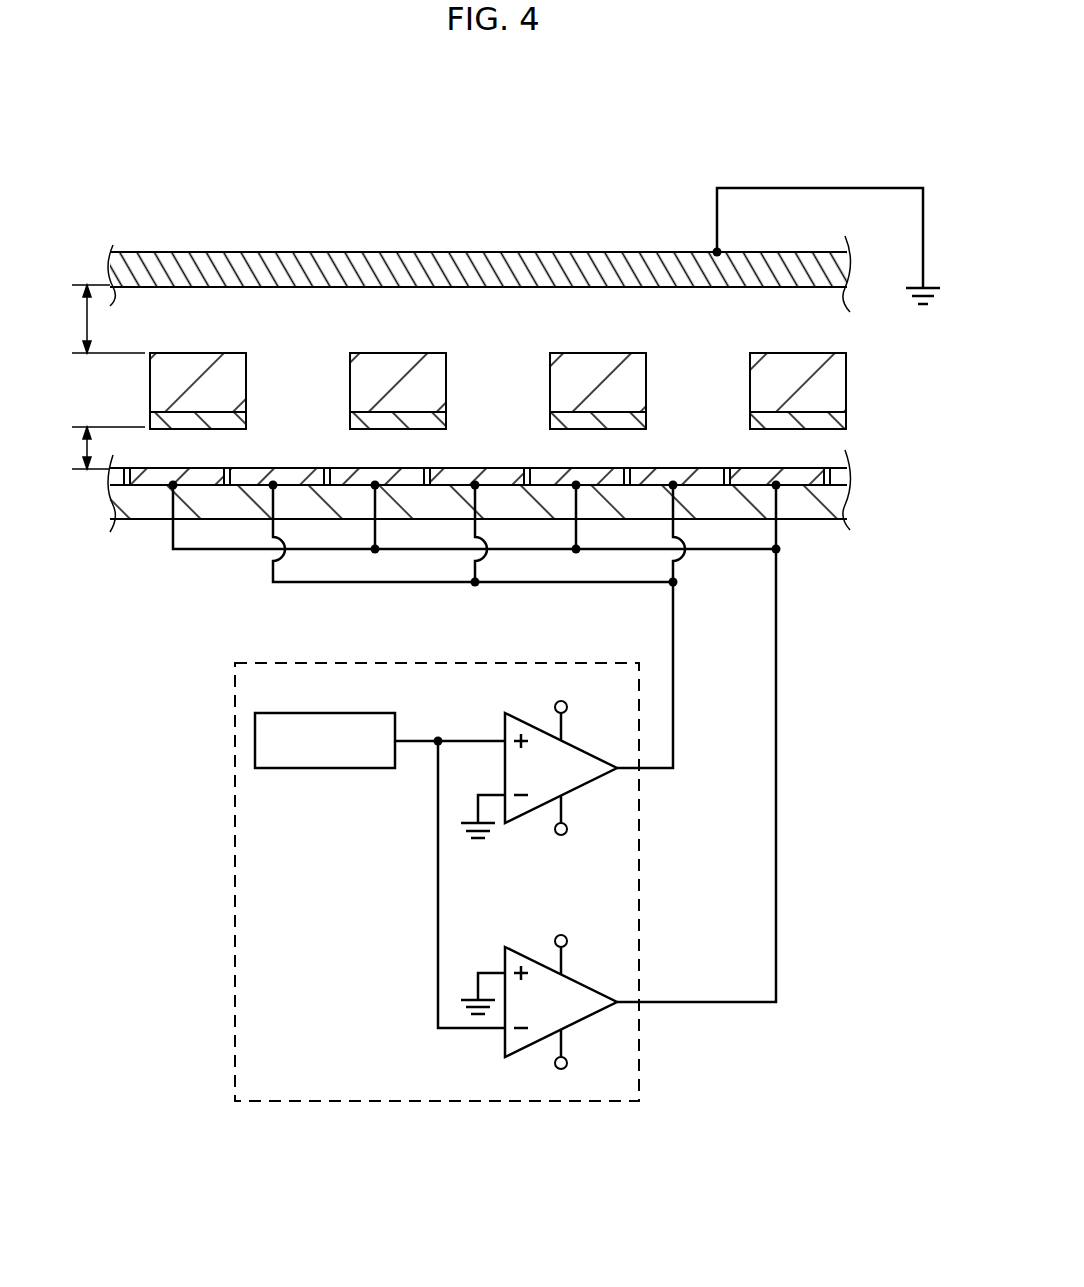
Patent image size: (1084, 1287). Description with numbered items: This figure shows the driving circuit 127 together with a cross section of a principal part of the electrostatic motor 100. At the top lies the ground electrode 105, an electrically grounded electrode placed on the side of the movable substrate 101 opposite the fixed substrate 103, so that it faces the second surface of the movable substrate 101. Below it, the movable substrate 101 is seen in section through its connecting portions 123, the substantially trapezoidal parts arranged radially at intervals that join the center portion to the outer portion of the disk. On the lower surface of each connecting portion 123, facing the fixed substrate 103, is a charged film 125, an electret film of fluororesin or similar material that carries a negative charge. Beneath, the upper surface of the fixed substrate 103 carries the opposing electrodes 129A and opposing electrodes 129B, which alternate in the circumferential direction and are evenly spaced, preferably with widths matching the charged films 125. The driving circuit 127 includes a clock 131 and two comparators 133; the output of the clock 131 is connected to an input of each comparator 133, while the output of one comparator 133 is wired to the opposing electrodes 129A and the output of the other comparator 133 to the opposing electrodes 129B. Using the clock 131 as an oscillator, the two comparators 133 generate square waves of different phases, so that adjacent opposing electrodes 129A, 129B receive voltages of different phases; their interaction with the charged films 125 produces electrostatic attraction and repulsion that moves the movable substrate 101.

The electrostatic motor 100 is at (836, 143).
The movable substrate 101 is at (549, 305).
The fixed substrate 103 is at (806, 510).
The ground electrode 105 is at (551, 258).
The connecting portion 123 is at (188, 364).
The charged film 125 is at (232, 422).
The driving circuit 127 is at (437, 660).
The opposing electrodes 129A is at (157, 476).
The opposing electrodes 129B is at (257, 475).
The clock 131 is at (325, 740).
The comparator 133 is at (560, 773).